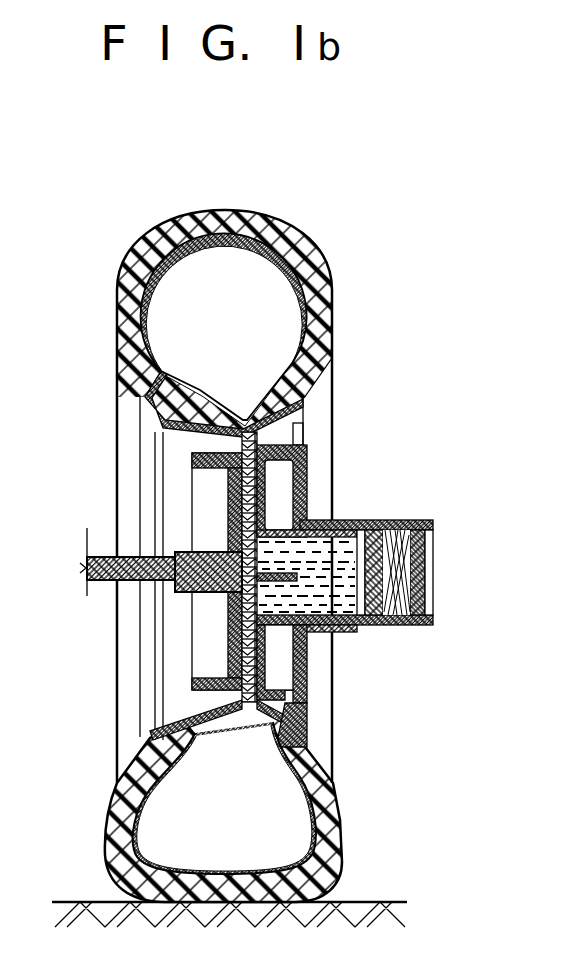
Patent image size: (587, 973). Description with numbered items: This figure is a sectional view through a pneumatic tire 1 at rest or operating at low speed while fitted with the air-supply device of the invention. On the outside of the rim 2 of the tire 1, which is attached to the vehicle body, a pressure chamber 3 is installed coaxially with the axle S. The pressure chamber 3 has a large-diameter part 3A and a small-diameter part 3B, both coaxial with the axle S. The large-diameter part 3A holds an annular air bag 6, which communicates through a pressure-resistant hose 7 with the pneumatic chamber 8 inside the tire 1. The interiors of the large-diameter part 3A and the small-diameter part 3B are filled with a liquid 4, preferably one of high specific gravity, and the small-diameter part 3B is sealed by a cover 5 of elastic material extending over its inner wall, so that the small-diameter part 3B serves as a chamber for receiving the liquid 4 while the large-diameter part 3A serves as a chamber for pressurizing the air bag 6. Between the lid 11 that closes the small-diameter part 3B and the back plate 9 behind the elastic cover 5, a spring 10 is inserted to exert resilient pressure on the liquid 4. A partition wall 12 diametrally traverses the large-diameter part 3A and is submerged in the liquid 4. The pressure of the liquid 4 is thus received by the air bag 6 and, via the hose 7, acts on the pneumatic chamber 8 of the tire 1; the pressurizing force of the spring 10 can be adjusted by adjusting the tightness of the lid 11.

The pneumatic tire 1 is at (346, 845).
The rim 2 is at (280, 430).
The pressure chamber 3 is at (307, 633).
The large-diameter part 3A is at (307, 483).
The small-diameter part 3B is at (357, 521).
The liquid 4 is at (310, 594).
The cover 5 is at (370, 604).
The annular air bag 6 is at (288, 530).
The pressure-resistant hose 7 is at (307, 727).
The pneumatic chamber 8 is at (233, 835).
The back plate 9 is at (386, 600).
The spring 10 is at (405, 520).
The lid 11 is at (433, 556).
The partition wall 12 is at (280, 574).
The axle S is at (100, 557).